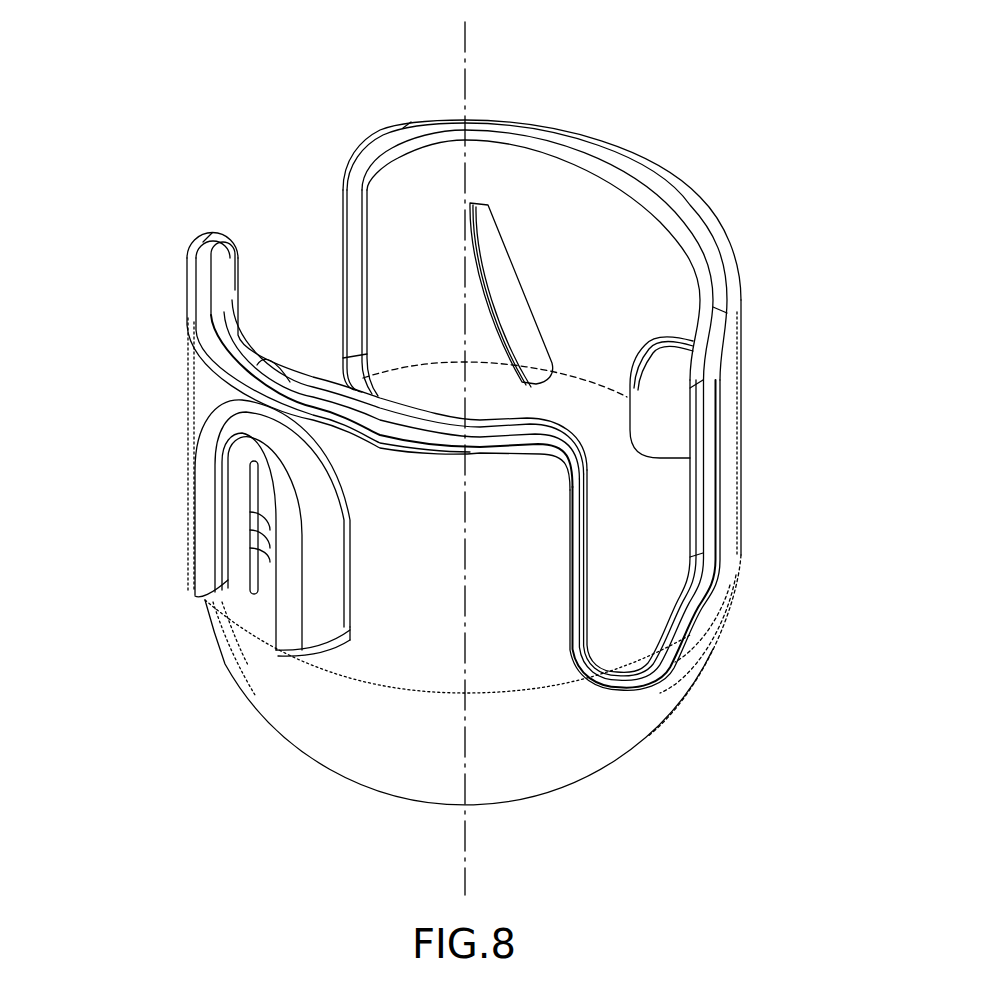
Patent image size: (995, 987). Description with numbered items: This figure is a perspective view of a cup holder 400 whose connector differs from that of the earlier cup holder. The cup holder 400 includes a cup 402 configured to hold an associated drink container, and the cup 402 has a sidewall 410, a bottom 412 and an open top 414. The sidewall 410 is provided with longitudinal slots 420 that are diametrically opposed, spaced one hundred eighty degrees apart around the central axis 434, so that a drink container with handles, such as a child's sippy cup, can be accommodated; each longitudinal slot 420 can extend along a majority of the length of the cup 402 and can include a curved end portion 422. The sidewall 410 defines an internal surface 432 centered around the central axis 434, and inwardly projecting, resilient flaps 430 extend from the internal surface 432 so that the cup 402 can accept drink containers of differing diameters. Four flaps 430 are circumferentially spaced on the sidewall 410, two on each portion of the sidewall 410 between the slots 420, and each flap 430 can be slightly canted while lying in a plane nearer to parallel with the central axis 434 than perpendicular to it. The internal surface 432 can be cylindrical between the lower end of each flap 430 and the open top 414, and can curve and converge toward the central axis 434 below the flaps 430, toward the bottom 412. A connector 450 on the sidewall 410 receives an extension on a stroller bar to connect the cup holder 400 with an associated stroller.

The cup holder 400 is at (786, 88).
The cup 402 is at (676, 149).
The sidewall 410 is at (734, 397).
The bottom 412 is at (495, 802).
The open top 414 is at (436, 120).
The longitudinal slots 420 is at (345, 243).
The curved end portion 422 is at (677, 642).
The flaps 430 is at (489, 247).
The internal surface 432 is at (662, 268).
The central axis 434 is at (463, 868).
The connector 450 is at (173, 579).